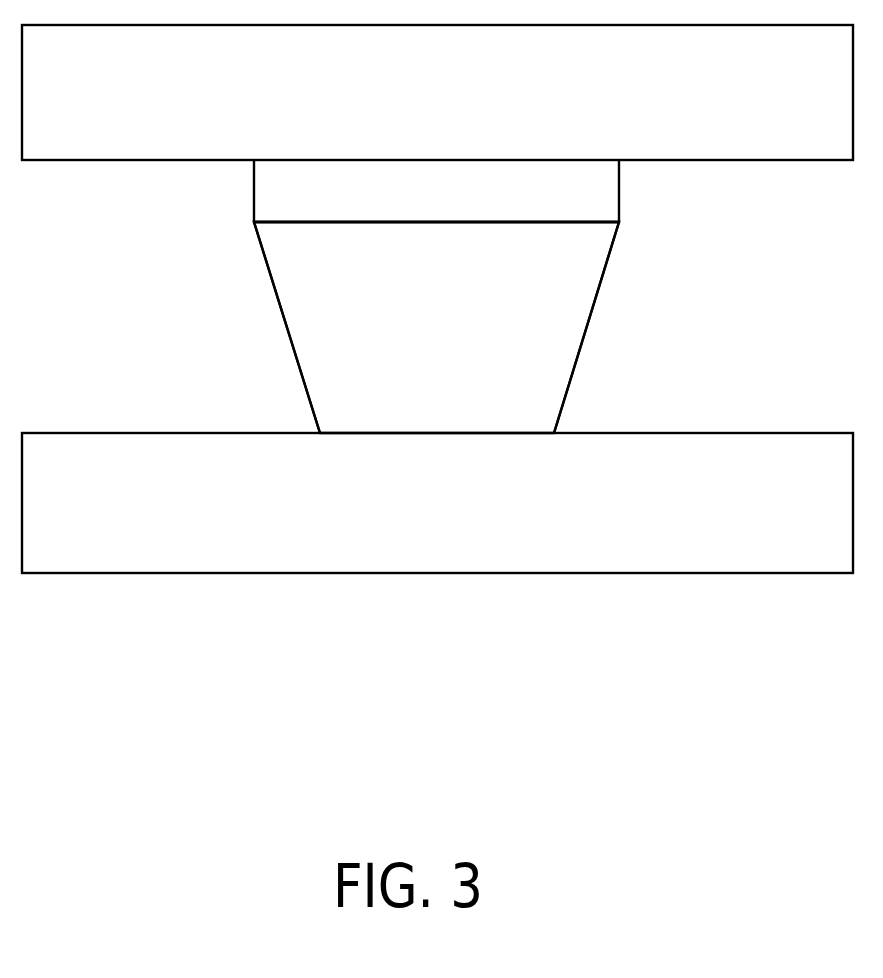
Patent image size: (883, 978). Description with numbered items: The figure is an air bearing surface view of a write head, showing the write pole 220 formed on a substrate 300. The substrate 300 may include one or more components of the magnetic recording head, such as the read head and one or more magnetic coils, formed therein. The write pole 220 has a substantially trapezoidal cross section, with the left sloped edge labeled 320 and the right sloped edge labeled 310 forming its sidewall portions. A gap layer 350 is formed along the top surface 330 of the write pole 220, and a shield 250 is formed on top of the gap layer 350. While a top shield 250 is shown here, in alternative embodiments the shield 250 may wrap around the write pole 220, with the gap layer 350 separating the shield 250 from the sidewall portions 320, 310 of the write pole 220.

The shield 250 is at (466, 99).
The substrate 300 is at (466, 527).
The gap layer 350 is at (467, 205).
The write pole 220 is at (466, 311).
The top surface 330 is at (372, 222).
The left sidewall 320 is at (275, 293).
The right sidewall 310 is at (583, 335).